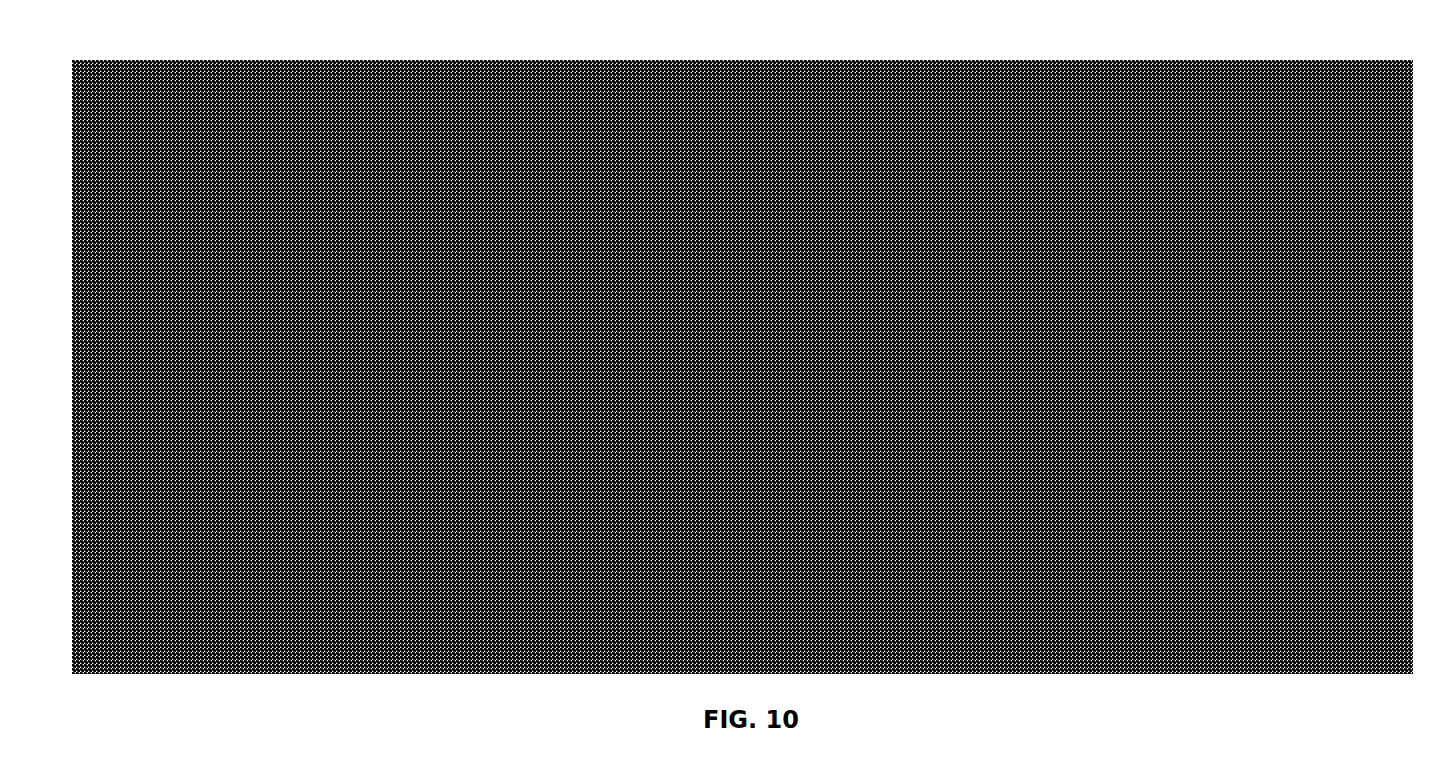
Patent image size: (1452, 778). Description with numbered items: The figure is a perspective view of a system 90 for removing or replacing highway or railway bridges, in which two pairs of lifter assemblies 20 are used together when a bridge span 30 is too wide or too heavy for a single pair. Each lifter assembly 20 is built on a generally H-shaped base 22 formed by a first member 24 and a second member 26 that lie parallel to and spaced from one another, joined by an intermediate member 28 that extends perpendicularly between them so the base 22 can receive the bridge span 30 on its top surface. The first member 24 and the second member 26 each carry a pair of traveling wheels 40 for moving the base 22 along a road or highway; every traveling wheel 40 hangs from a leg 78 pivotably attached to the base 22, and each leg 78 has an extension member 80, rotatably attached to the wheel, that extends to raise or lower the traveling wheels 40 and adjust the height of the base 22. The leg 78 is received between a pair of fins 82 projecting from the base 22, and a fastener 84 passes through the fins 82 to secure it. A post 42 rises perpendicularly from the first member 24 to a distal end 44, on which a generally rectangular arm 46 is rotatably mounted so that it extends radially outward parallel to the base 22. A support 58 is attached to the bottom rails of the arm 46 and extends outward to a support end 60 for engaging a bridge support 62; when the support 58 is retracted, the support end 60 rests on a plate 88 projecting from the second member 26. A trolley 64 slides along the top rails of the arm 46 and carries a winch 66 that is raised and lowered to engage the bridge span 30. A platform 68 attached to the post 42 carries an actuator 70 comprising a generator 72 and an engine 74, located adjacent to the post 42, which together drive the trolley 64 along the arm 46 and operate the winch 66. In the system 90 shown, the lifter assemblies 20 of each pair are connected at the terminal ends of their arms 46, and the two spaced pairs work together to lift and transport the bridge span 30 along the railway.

The lifter assembly 20 is at (760, 52).
The base 22 is at (681, 286).
The first member 24 is at (725, 414).
The second member 26 is at (574, 439).
The intermediate member 28 is at (683, 268).
The bridge span 30 is at (718, 269).
The traveling wheels 40 is at (607, 680).
The post 42 is at (726, 289).
The distal end 44 is at (795, 60).
The arm 46 is at (755, 204).
The support 58 is at (821, 178).
The support end 60 is at (637, 409).
The bridge support 62 is at (1040, 664).
The trolley 64 is at (810, 169).
The winch 66 is at (826, 352).
The platform 68 is at (1414, 335).
The actuator 70 is at (411, 347).
The generator 72 is at (676, 305).
The engine 74 is at (1398, 270).
The leg 78 is at (594, 378).
The extension member 80 is at (491, 682).
The fins 82 is at (800, 362).
The fastener 84 is at (908, 366).
The plate 88 is at (621, 425).
The system 90 is at (1052, 52).